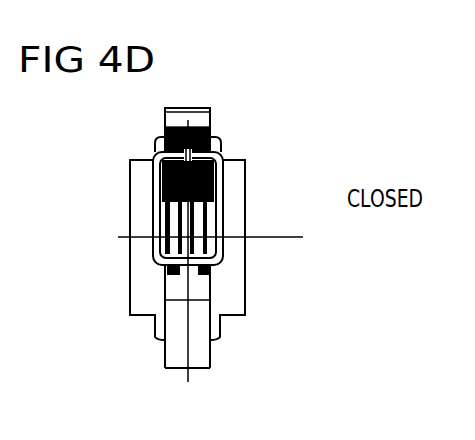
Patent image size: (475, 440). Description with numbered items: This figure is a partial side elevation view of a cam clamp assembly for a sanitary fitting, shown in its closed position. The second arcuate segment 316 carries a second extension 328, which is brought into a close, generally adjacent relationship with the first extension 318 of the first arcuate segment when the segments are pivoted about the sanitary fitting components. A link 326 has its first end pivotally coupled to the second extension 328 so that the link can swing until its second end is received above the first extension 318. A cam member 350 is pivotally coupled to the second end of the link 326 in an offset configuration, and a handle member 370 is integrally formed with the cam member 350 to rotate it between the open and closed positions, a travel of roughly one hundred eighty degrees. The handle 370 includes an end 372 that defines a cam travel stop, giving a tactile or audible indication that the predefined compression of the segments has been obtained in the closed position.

The second arcuate segment 316 is at (190, 371).
The first extension 318 is at (203, 215).
The link 326 is at (148, 247).
The second extension 328 is at (207, 270).
The cam member 350 is at (213, 141).
The handle member 370 is at (211, 117).
The end 372 is at (220, 93).